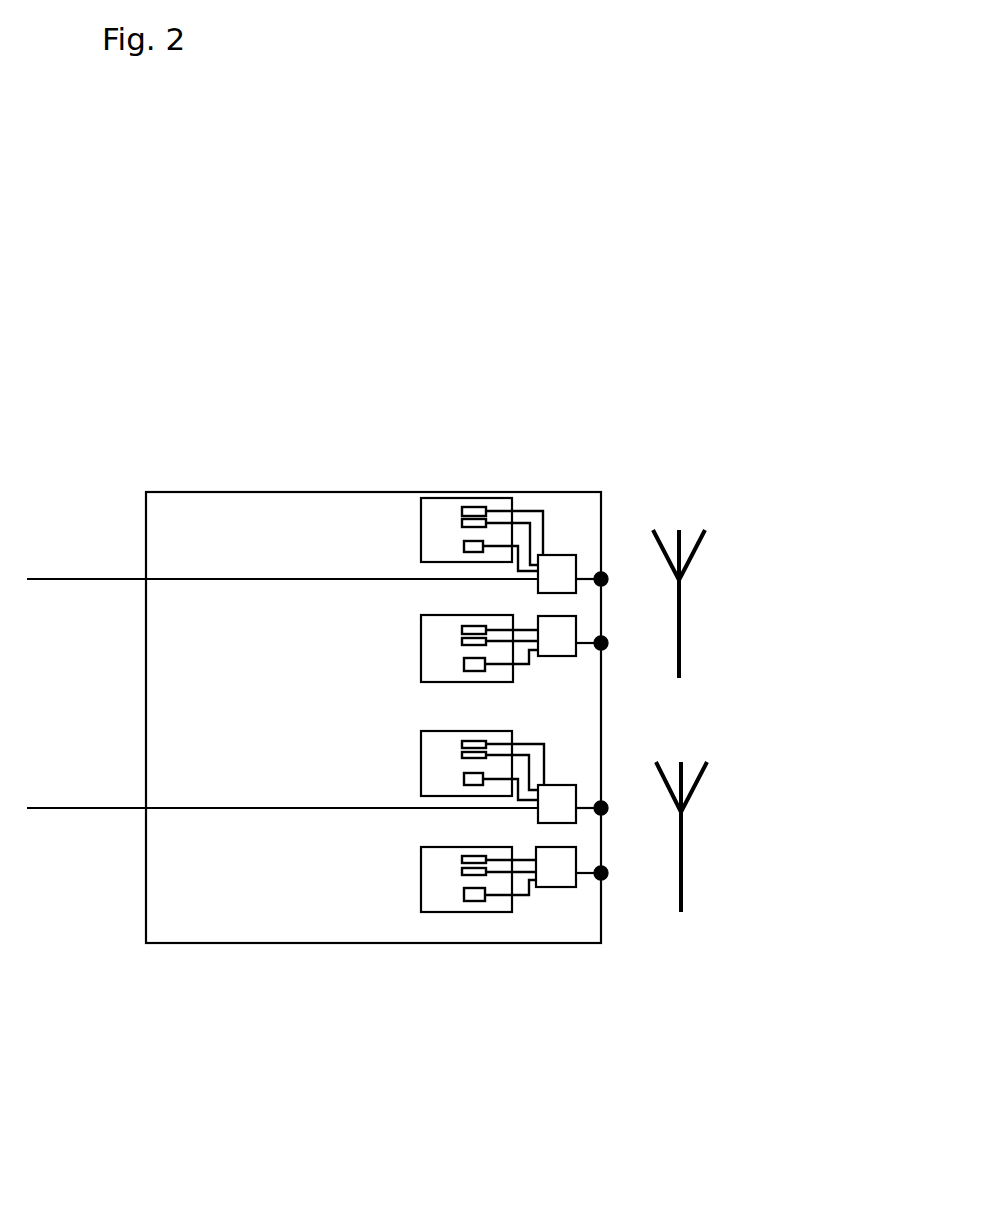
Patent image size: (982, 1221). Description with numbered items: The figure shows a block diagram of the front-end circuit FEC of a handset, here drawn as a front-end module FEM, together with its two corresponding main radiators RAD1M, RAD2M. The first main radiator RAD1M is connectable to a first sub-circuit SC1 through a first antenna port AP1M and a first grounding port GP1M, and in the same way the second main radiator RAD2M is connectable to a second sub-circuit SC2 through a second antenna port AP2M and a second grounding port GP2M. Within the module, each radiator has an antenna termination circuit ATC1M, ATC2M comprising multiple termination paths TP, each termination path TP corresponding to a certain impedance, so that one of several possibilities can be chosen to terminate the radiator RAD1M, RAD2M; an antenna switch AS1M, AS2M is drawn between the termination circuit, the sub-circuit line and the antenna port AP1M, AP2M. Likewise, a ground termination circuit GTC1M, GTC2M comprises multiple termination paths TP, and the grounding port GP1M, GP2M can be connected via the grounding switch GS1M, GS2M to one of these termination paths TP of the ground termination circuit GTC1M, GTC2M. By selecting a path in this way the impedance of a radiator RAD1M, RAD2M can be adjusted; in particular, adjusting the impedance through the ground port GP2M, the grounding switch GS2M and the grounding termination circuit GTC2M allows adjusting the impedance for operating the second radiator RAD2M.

The front-end circuit FEC is at (157, 444).
The front-end module FEM is at (146, 515).
The first sub-circuit SC1 is at (355, 592).
The second sub-circuit SC2 is at (376, 819).
The antenna termination circuit ATC1M is at (435, 527).
The first antenna switch AS1M is at (563, 570).
The first antenna port AP1M is at (601, 579).
The first main radiator RAD1M is at (679, 612).
The ground termination circuit GTC1M is at (433, 633).
The grounding switch GS1M is at (553, 633).
The first grounding port GP1M is at (601, 643).
The antenna termination circuit ATC2M is at (441, 745).
The second antenna switch AS2M is at (548, 805).
The second antenna port AP2M is at (601, 808).
The second main radiator RAD2M is at (683, 850).
The grounding termination circuit GTC2M is at (439, 868).
The grounding switch GS2M is at (554, 862).
The second grounding port GP2M is at (601, 873).
The termination path TP is at (500, 547).